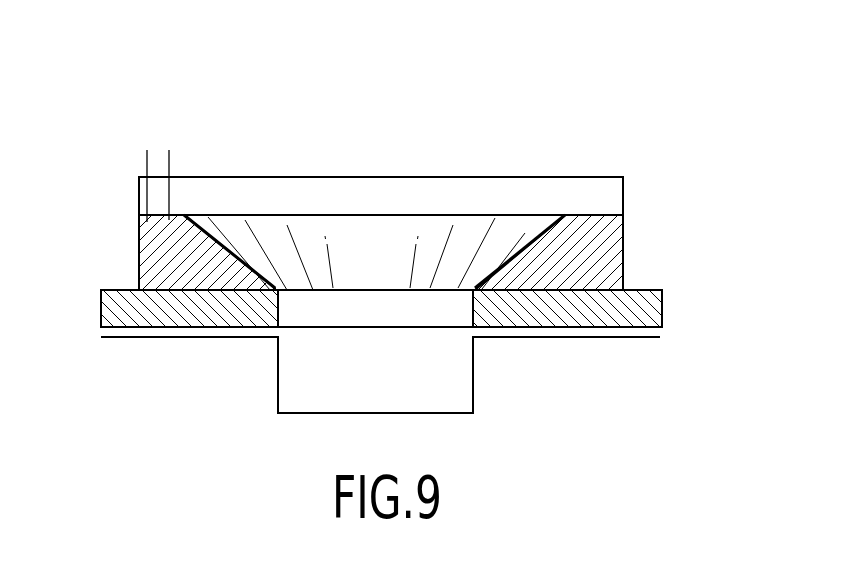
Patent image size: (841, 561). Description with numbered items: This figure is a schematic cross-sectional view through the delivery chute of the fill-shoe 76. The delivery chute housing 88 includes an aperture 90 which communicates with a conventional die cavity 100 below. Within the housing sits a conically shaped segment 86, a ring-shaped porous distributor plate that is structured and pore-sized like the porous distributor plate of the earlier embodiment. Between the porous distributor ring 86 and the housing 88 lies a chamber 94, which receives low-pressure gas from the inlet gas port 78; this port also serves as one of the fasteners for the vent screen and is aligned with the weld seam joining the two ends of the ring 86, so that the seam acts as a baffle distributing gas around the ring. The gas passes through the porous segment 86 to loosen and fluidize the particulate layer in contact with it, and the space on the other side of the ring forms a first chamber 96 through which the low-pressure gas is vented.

The fill-shoe 76 is at (592, 110).
The inlet gas port 78 is at (158, 151).
The conically shaped segment 86 is at (523, 248).
The delivery chute housing 88 is at (625, 248).
The aperture 90 is at (427, 315).
The chamber 94 is at (182, 257).
The first chamber 96 is at (380, 247).
The die cavity 100 is at (348, 383).